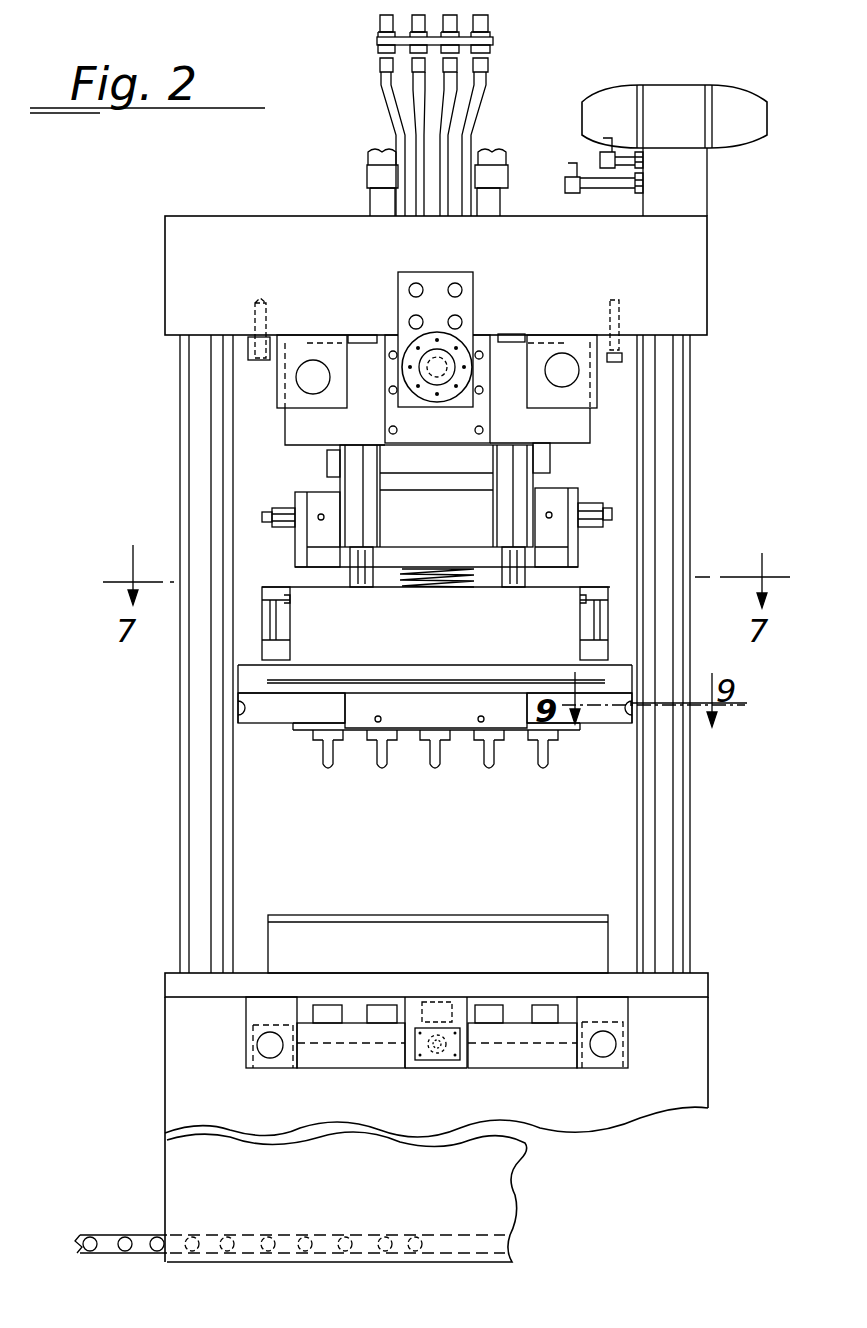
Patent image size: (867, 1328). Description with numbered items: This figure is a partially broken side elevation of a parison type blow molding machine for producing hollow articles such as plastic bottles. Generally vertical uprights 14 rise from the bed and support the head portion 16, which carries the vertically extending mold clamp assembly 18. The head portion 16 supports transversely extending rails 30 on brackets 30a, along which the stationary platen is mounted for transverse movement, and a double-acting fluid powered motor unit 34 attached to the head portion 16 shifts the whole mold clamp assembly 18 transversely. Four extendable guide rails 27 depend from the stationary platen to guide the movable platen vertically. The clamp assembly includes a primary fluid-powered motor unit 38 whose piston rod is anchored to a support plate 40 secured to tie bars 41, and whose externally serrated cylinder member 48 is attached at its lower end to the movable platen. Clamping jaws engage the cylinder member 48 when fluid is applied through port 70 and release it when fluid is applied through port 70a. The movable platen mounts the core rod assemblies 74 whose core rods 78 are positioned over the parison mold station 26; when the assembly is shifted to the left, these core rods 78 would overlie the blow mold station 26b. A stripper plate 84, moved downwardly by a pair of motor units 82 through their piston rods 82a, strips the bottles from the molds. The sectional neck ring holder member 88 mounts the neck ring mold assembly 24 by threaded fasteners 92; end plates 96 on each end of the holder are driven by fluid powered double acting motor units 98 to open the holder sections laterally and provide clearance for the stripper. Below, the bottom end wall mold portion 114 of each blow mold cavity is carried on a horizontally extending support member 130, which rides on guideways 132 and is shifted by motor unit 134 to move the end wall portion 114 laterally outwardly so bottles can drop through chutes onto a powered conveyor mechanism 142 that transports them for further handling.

The head portion 16 is at (682, 242).
The uprights 14 is at (718, 798).
The support plate 40 is at (372, 172).
The tie bars 41 is at (375, 202).
The double-acting fluid powered motor unit 34 is at (462, 338).
The transversely extending rails 30 is at (312, 375).
The brackets 30a is at (558, 408).
The extendable guide rails 27 is at (507, 458).
The port 70a is at (552, 513).
The port 70 is at (599, 508).
The primary fluid-powered motor unit 38 is at (472, 580).
The cylinder member 48 is at (440, 582).
The mold clamp assembly 18 is at (460, 593).
The motor units 82 is at (600, 620).
The piston rods 82a is at (597, 682).
The sectional neck ring holder member 88 is at (357, 712).
The stripper plate 84 is at (390, 693).
The end plates 96 is at (600, 722).
The fluid powered double acting motor units 98 is at (632, 688).
The threaded fasteners 92 is at (479, 717).
The neck ring mold assembly 24 is at (573, 740).
The core rods 78 is at (537, 757).
The core rod assemblies 74 is at (542, 774).
The parison mold station 26 is at (455, 915).
The blow mold station 26b is at (312, 947).
The support member 130 is at (535, 1060).
The bottom end wall mold portion 114 is at (540, 1005).
The guideways 132 is at (603, 1052).
The motor unit 134 is at (437, 1058).
The powered conveyor mechanism 142 is at (105, 1235).